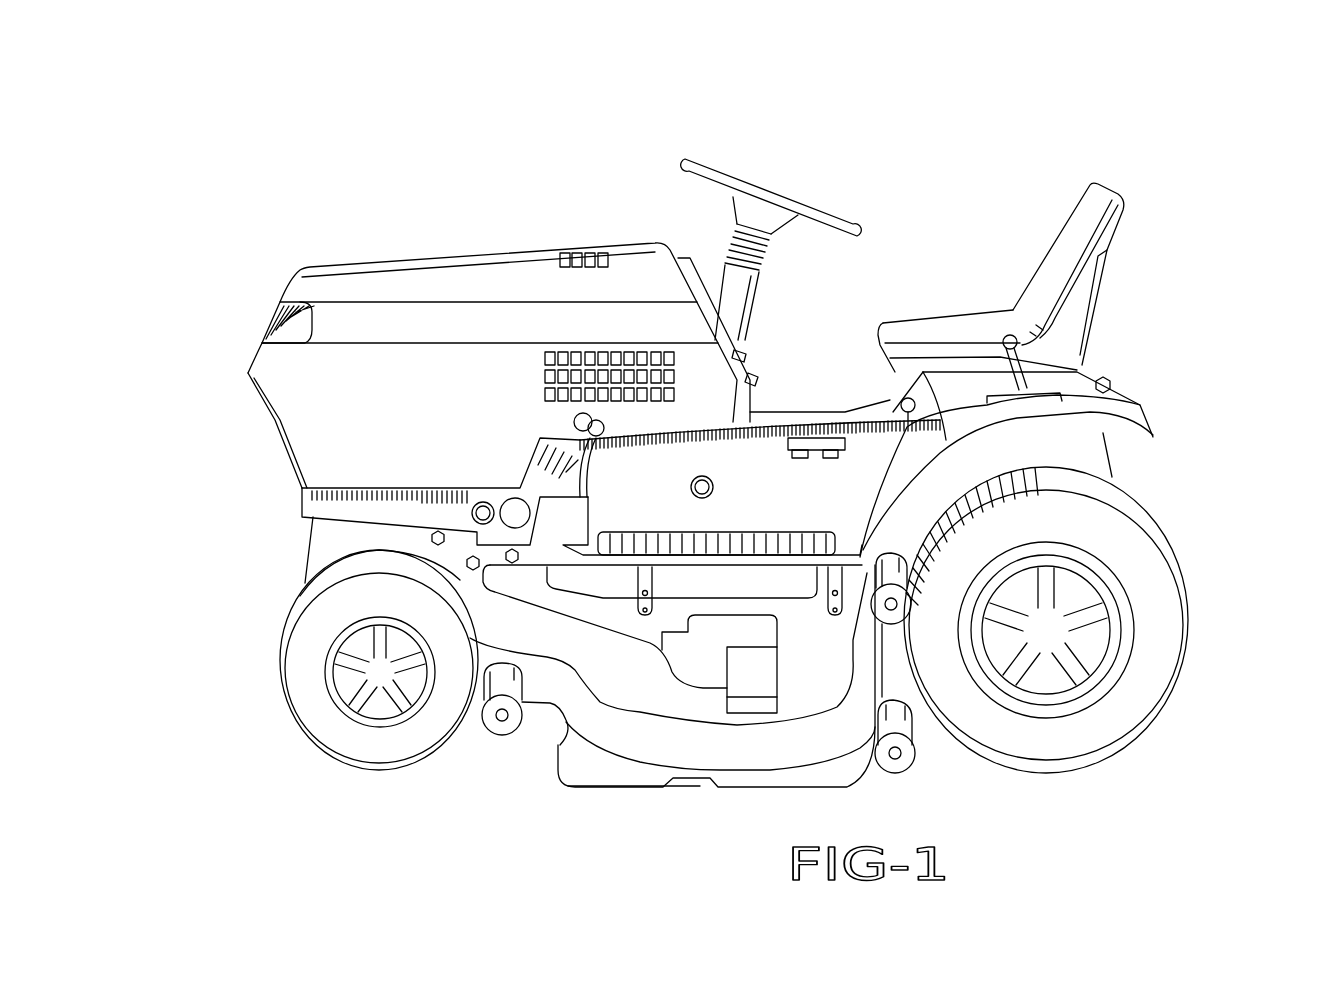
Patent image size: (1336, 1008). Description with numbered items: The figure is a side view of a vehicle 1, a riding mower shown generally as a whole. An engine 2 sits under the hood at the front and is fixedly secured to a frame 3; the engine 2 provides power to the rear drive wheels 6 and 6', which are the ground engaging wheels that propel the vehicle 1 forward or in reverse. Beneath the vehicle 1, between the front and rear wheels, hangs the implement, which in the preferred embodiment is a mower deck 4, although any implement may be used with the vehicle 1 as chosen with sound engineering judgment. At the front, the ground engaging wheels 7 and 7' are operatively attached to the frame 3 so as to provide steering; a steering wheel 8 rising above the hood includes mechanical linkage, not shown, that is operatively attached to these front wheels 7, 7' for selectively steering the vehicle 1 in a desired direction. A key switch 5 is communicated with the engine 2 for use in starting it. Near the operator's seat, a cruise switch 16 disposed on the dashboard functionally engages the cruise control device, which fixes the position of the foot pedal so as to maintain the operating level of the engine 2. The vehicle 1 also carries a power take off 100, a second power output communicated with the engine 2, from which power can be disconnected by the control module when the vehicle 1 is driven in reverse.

The vehicle 1 is at (958, 150).
The engine 2 is at (249, 289).
The frame 3 is at (330, 543).
The mower deck 4 is at (628, 697).
The key switch 5 is at (772, 245).
The drive wheel 6 is at (1088, 620).
The drive wheel 6' is at (1051, 470).
The front ground engaging wheel 7 is at (317, 660).
The front ground engaging wheel 7' is at (295, 564).
The steering wheel 8 is at (722, 180).
The cruise switch 16 is at (752, 380).
The power take off 100 is at (575, 798).